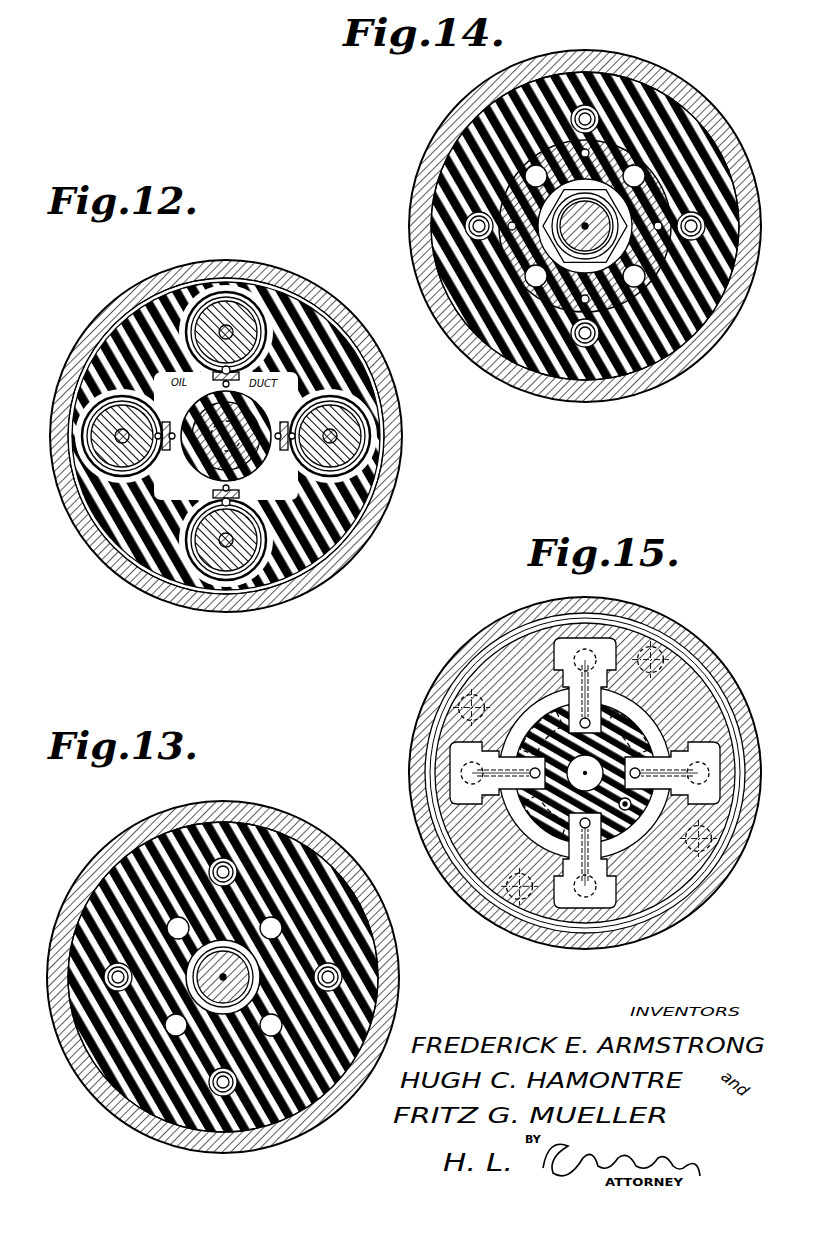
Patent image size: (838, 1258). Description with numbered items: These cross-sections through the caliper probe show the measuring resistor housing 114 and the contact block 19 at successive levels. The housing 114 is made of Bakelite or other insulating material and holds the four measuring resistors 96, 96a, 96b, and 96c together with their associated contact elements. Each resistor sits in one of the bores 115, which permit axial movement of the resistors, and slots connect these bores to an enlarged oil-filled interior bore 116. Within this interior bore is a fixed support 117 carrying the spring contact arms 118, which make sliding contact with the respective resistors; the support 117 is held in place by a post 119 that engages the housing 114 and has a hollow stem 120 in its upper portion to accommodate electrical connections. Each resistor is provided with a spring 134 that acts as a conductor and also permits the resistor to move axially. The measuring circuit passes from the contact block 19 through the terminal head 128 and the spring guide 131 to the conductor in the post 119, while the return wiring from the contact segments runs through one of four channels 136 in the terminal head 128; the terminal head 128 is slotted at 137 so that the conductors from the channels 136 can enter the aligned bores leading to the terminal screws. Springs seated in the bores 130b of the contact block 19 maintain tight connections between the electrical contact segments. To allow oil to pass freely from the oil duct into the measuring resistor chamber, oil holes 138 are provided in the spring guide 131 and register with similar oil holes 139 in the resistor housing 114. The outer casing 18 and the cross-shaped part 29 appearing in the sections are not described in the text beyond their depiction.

In FIG. 14, the housing 18 is at (720, 306).
In FIG. 12, the housing 18 is at (357, 528).
In FIG. 13, the housing 18 is at (283, 1128).
In FIG. 15, the housing 18 is at (694, 906).
In FIG. 15, the contact block 19 is at (480, 652).
In FIG. 15, the cross-shaped bracket 29 is at (566, 690).
In FIG. 12, the measuring resistor 96 is at (97, 410).
In FIG. 12, the measuring resistor 96a is at (357, 430).
In FIG. 12, the measuring resistor 96b is at (240, 287).
In FIG. 12, the measuring resistor 96c is at (167, 590).
In FIG. 14, the housing 114 is at (440, 190).
In FIG. 12, the housing 114 is at (330, 506).
In FIG. 13, the housing 114 is at (350, 933).
In FIG. 12, the bores 115 is at (195, 282).
In FIG. 12, the interior bore 116 is at (180, 485).
In FIG. 12, the support 117 is at (186, 452).
In FIG. 12, the spring contact arms 118 is at (207, 368).
In FIG. 14, the post 119 is at (598, 210).
In FIG. 13, the post 119 is at (224, 955).
In FIG. 13, the hollow stem 120 is at (219, 953).
In FIG. 15, the terminal head 128 is at (622, 804).
In FIG. 15, the bores 130b is at (694, 643).
In FIG. 14, the spring guide 131 is at (520, 166).
In FIG. 14, the spring 134 is at (584, 338).
In FIG. 13, the spring 134 is at (229, 853).
In FIG. 15, the channel 136 is at (430, 737).
In FIG. 15, the slot 137 is at (640, 726).
In FIG. 14, the oil holes 138 is at (516, 160).
In FIG. 13, the oil holes 139 is at (160, 918).